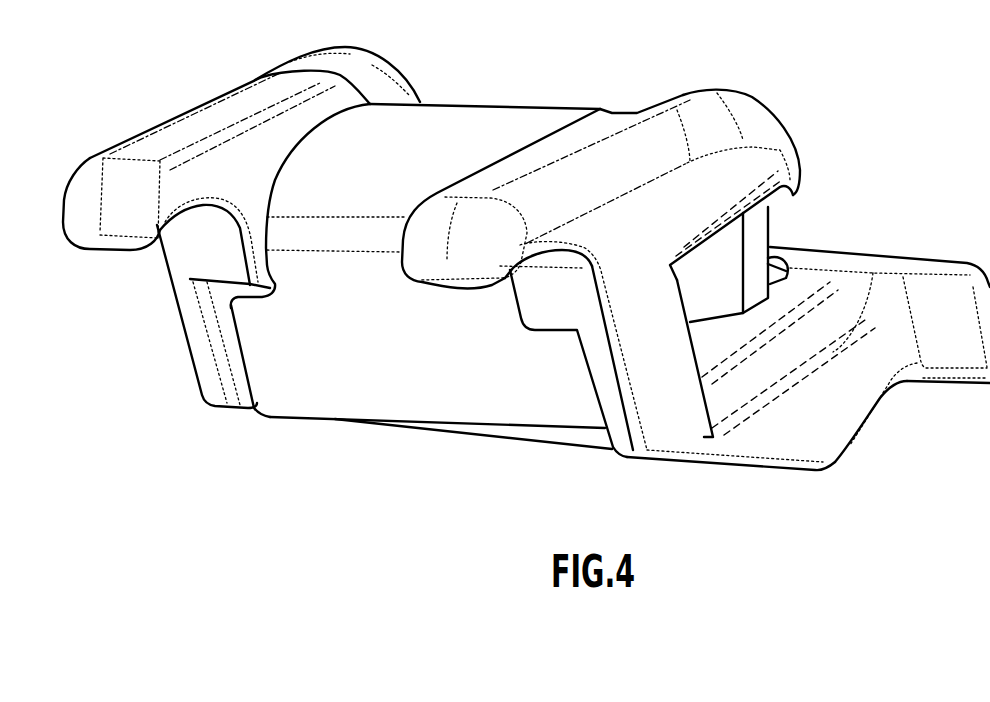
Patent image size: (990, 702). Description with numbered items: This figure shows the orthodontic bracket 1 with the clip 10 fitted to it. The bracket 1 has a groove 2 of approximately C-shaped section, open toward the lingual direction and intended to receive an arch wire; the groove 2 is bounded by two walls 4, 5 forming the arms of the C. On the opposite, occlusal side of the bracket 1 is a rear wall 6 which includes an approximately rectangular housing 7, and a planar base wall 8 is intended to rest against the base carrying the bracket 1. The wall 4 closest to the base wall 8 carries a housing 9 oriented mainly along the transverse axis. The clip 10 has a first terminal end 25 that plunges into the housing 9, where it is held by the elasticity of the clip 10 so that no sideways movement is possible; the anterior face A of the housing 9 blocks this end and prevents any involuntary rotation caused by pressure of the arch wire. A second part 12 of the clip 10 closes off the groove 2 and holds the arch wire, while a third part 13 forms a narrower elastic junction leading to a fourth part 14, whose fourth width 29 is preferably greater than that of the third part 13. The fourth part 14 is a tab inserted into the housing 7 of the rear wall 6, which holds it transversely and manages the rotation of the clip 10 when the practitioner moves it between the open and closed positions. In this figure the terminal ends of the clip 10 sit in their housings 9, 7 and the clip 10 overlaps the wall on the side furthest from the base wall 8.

The bracket 1 is at (922, 239).
The groove 2 is at (722, 316).
The wall 4 is at (847, 267).
The wall 5 is at (803, 185).
The rear wall 6 is at (607, 403).
The housing 7 is at (230, 350).
The base wall 8 is at (709, 460).
The housing 9 is at (772, 281).
The clip 10 is at (467, 128).
The second part 12 is at (727, 268).
The third part 13 is at (307, 242).
The fourth part 14 is at (325, 392).
The first terminal end 25 is at (707, 306).
The fourth width 29 is at (585, 374).
The anterior face A is at (787, 270).